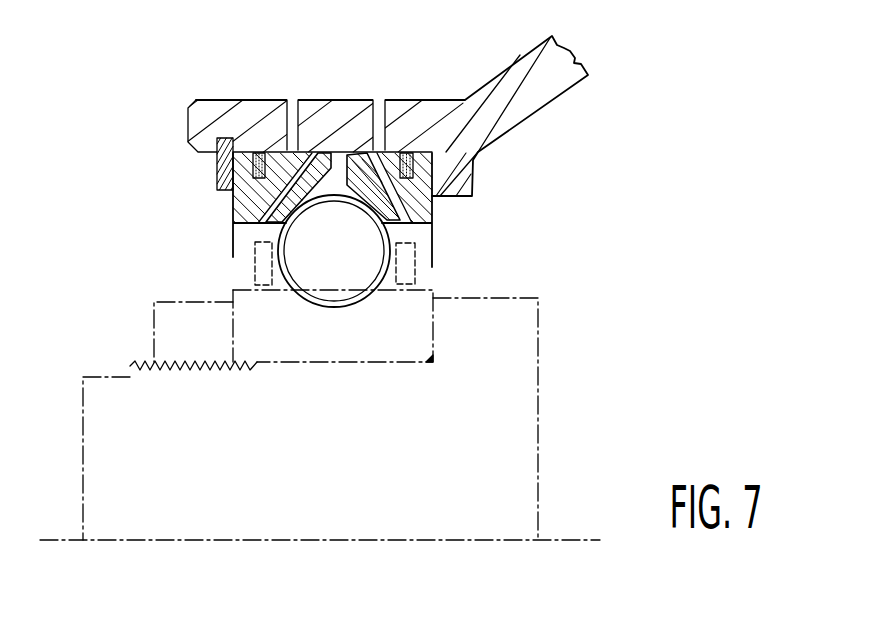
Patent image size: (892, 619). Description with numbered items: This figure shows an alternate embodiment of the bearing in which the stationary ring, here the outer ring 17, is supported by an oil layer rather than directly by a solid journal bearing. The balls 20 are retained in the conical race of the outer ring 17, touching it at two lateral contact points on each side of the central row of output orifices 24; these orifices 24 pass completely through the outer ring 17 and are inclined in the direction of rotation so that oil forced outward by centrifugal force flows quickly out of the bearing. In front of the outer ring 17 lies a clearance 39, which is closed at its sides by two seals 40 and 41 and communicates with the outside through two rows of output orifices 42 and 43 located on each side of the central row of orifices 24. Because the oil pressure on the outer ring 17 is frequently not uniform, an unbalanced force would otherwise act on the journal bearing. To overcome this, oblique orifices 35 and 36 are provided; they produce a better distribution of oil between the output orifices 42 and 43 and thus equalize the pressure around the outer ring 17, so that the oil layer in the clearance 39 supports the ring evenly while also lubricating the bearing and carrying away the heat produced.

The outer ring 17 is at (228, 210).
The balls 20 is at (338, 285).
The output orifices 24 is at (335, 183).
The oblique orifice 35 is at (262, 223).
The oblique orifice 36 is at (395, 222).
The clearance 39 is at (334, 154).
The seal 40 is at (254, 152).
The seal 41 is at (414, 176).
The output orifices 42 is at (291, 108).
The output orifices 43 is at (382, 107).